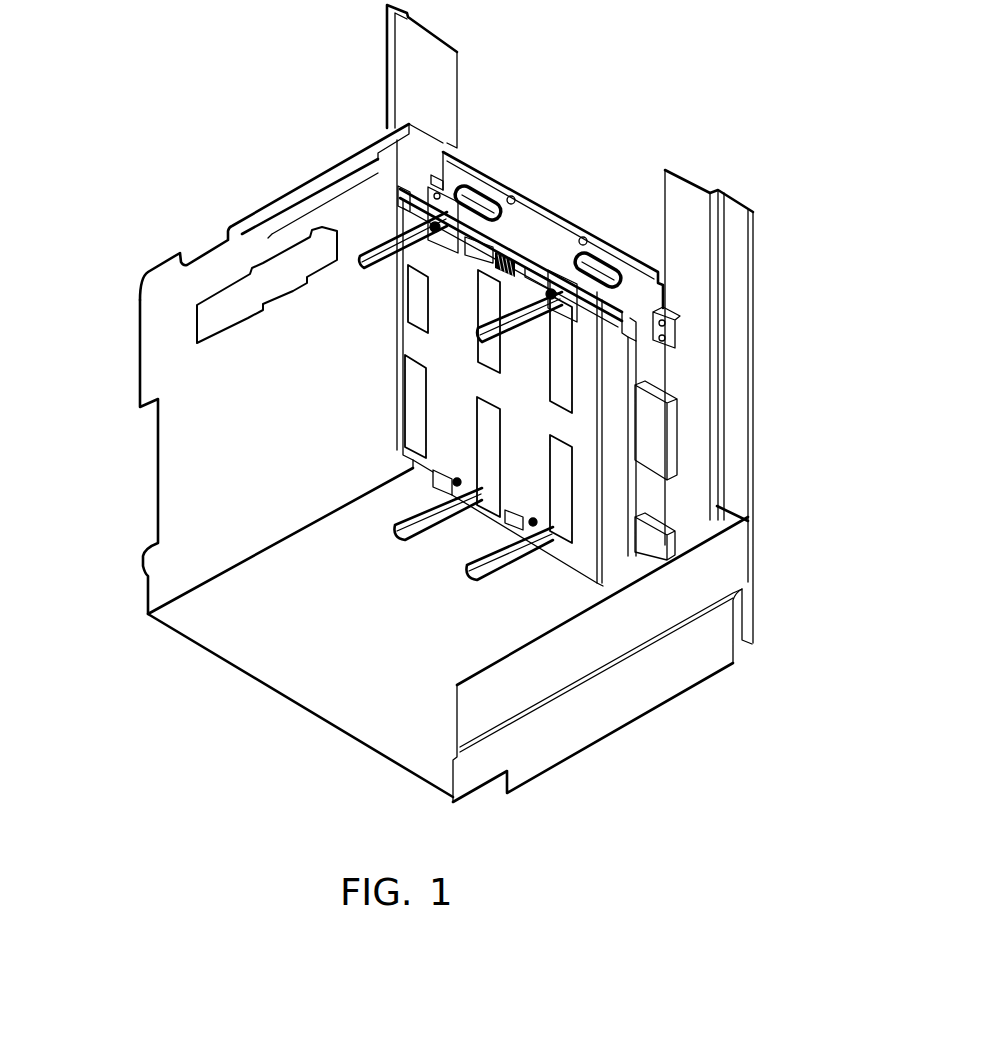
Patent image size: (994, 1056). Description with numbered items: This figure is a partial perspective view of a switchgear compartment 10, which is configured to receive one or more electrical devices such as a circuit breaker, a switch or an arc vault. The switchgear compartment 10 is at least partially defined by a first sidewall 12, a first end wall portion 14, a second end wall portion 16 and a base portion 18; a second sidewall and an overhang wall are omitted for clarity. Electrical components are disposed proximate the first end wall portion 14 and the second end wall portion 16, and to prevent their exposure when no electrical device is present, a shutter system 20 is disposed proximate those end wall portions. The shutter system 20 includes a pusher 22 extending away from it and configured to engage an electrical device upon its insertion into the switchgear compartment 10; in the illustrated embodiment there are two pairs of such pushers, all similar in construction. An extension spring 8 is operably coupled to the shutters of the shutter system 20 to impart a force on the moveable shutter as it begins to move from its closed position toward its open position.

The extension spring 8 is at (497, 252).
The switchgear compartment 10 is at (164, 212).
The first sidewall 12 is at (292, 402).
The first end wall portion 14 is at (427, 68).
The second end wall portion 16 is at (695, 338).
The base portion 18 is at (342, 681).
The shutter system 20 is at (565, 196).
The pusher 22 is at (384, 228).